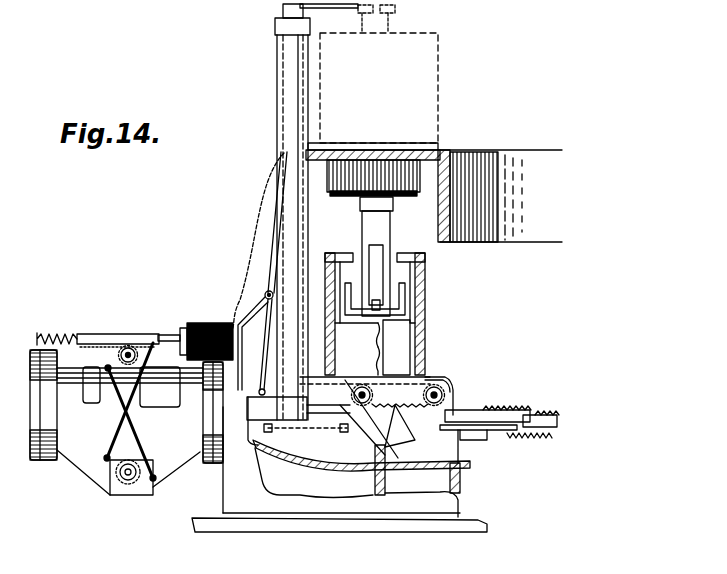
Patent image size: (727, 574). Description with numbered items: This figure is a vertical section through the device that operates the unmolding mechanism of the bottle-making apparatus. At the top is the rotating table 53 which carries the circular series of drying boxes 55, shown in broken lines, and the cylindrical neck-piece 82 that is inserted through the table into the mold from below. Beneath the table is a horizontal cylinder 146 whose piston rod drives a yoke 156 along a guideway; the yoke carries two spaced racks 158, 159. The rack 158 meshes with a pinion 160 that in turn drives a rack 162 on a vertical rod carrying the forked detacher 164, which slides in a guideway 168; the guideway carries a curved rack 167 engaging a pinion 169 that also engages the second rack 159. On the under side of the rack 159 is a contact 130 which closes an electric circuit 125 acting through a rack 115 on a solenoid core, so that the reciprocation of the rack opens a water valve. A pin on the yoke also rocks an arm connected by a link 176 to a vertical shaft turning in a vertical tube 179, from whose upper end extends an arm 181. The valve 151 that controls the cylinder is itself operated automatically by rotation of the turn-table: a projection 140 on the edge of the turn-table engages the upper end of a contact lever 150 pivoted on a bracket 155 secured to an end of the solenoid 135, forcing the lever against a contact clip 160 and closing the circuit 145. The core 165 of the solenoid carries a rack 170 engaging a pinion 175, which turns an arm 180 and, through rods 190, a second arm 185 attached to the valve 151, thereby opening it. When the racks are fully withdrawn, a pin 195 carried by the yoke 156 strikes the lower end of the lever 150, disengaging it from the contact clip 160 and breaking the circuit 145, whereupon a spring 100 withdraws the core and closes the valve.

The table 53 is at (449, 152).
The drying box 55 is at (439, 97).
The neck-piece 82 is at (393, 261).
The spring 100 is at (52, 326).
The rack 115 is at (492, 431).
The electric circuit 125 is at (546, 441).
The contact 130 is at (546, 421).
The solenoid 135 is at (200, 322).
The projection 140 is at (308, 148).
The circuit 145 is at (262, 214).
The horizontal cylinder 146 is at (126, 422).
The contact lever 150 is at (285, 272).
The valve 151 is at (131, 482).
The bracket 155 is at (264, 296).
The yoke 156 is at (390, 413).
The rack 158 is at (390, 419).
The rack 159 is at (521, 396).
The pinion 160 is at (272, 140).
The rack 162 is at (362, 342).
The forked detacher 164 is at (359, 334).
The core 165 is at (170, 336).
The rack 167 is at (430, 383).
The guideway 168 is at (425, 346).
The pinion 169 is at (446, 395).
The rack 170 is at (118, 327).
The pinion 175 is at (107, 356).
The link 176 is at (302, 458).
The vertical tube 179 is at (277, 88).
The arm 180 is at (102, 386).
The arm 181 is at (347, 18).
The arm 185 is at (112, 472).
The rods 190 is at (131, 408).
The pin 195 is at (300, 426).